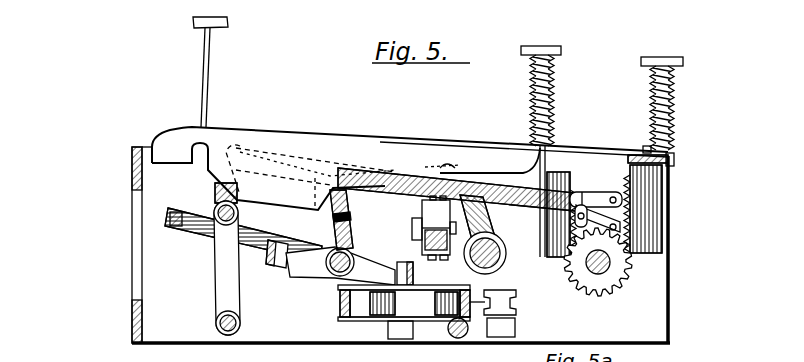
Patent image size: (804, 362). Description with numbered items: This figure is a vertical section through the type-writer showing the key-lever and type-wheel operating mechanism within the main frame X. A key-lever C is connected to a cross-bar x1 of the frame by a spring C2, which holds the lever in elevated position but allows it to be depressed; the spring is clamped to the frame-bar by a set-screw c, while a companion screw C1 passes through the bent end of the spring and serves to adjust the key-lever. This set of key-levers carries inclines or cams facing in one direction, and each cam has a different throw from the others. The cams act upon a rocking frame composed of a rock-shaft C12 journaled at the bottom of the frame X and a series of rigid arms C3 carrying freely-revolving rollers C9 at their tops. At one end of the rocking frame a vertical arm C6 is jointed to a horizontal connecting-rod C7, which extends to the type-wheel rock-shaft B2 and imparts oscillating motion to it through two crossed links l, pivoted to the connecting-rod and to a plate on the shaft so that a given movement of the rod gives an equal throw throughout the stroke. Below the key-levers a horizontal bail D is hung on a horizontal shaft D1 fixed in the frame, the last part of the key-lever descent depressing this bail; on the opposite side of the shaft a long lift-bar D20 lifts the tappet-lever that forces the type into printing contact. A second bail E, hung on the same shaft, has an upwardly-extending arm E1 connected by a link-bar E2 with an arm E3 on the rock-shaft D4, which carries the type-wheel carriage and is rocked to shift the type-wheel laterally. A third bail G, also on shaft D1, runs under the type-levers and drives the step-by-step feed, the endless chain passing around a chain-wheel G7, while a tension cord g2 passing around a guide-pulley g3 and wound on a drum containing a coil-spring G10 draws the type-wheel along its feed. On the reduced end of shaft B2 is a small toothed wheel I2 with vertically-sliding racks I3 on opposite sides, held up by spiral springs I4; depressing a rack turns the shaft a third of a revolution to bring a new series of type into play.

The main frame X is at (172, 298).
The key-lever C is at (325, 143).
The key-lever C1 is at (672, 164).
The spring C2 is at (218, 184).
The set-screw c is at (645, 147).
The cross-bar x1 is at (672, 154).
The rigid arm C3 is at (227, 268).
The vertical arm C6 is at (213, 193).
The connecting-rod C7 is at (461, 190).
The roller C9 is at (240, 216).
The rock-shaft C12 is at (241, 325).
The bail G is at (170, 217).
The chain-wheel G7 is at (422, 212).
The coil-spring G10 is at (372, 308).
The tension strap or cord g2 is at (517, 303).
The guide-pulley g3 is at (490, 290).
The bail D is at (275, 266).
The horizontal shaft D1 is at (350, 252).
The rock-shaft D4 is at (506, 258).
The lift-bar D20 is at (413, 276).
The bail E is at (300, 278).
The upwardly-extending arm E1 is at (348, 222).
The link-bar E2 is at (450, 167).
The arm E3 is at (484, 217).
The toothed wheel I2 is at (610, 288).
The rack I3 is at (548, 236).
The spiral spring I4 is at (553, 82).
The link l is at (597, 194).
The rock-shaft B2 is at (598, 276).